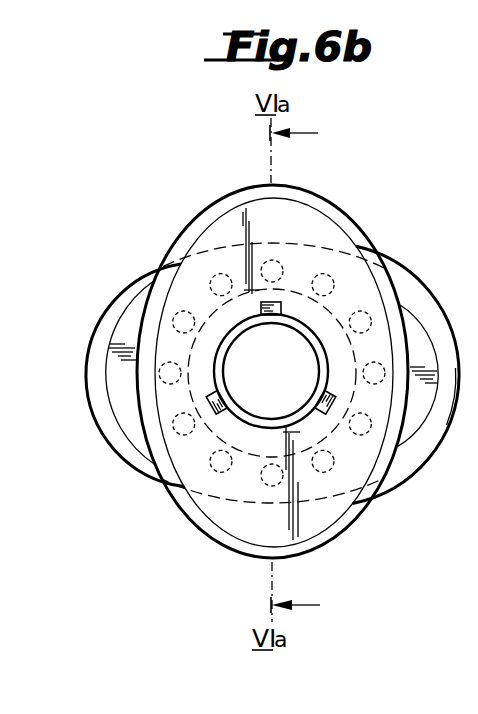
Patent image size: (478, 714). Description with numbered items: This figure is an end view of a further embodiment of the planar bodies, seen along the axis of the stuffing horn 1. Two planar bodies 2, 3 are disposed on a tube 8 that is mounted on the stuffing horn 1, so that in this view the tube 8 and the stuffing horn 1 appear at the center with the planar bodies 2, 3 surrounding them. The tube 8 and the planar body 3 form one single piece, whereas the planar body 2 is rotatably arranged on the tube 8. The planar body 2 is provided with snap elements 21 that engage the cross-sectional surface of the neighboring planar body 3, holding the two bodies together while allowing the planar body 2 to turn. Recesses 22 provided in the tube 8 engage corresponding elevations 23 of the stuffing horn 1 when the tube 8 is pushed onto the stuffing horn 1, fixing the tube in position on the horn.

The stuffing horn 1 is at (250, 327).
The planar body 2 is at (433, 428).
The planar body 3 is at (302, 552).
The tube 8 is at (292, 283).
The snap elements 21 is at (368, 318).
The recesses 22 is at (221, 412).
The elevations 23 is at (313, 396).